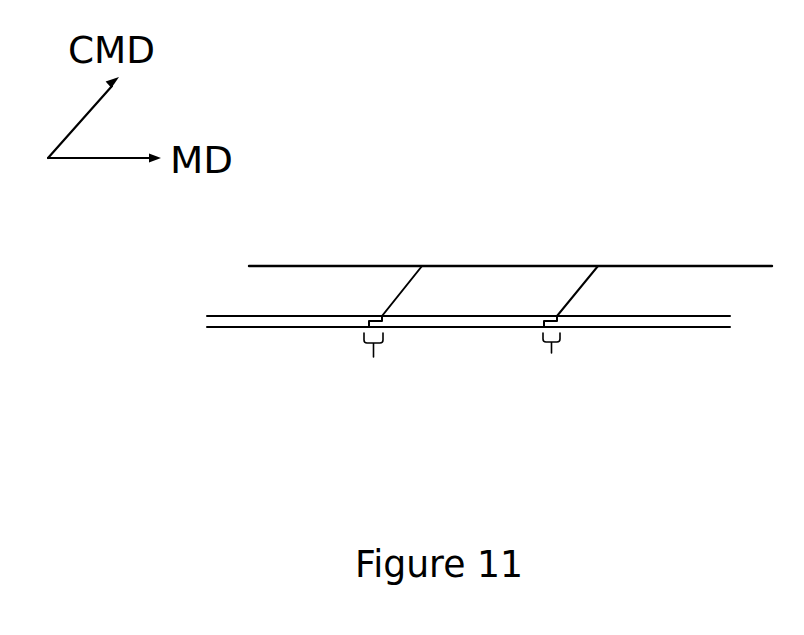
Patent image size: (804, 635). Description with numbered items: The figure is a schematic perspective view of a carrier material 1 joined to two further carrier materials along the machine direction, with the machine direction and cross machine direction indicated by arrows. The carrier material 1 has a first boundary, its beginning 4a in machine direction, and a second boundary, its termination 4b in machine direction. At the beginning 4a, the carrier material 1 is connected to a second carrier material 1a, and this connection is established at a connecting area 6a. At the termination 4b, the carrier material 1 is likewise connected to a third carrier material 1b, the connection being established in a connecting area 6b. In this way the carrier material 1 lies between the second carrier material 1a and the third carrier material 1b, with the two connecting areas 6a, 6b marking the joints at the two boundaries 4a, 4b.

The carrier material 1 is at (528, 298).
The second carrier material 1a is at (716, 299).
The third carrier material 1b is at (297, 298).
The beginning of the carrier material 4a is at (578, 266).
The termination of the carrier material 4b is at (402, 266).
The connecting area 6a is at (551, 370).
The connecting area 6b is at (376, 370).